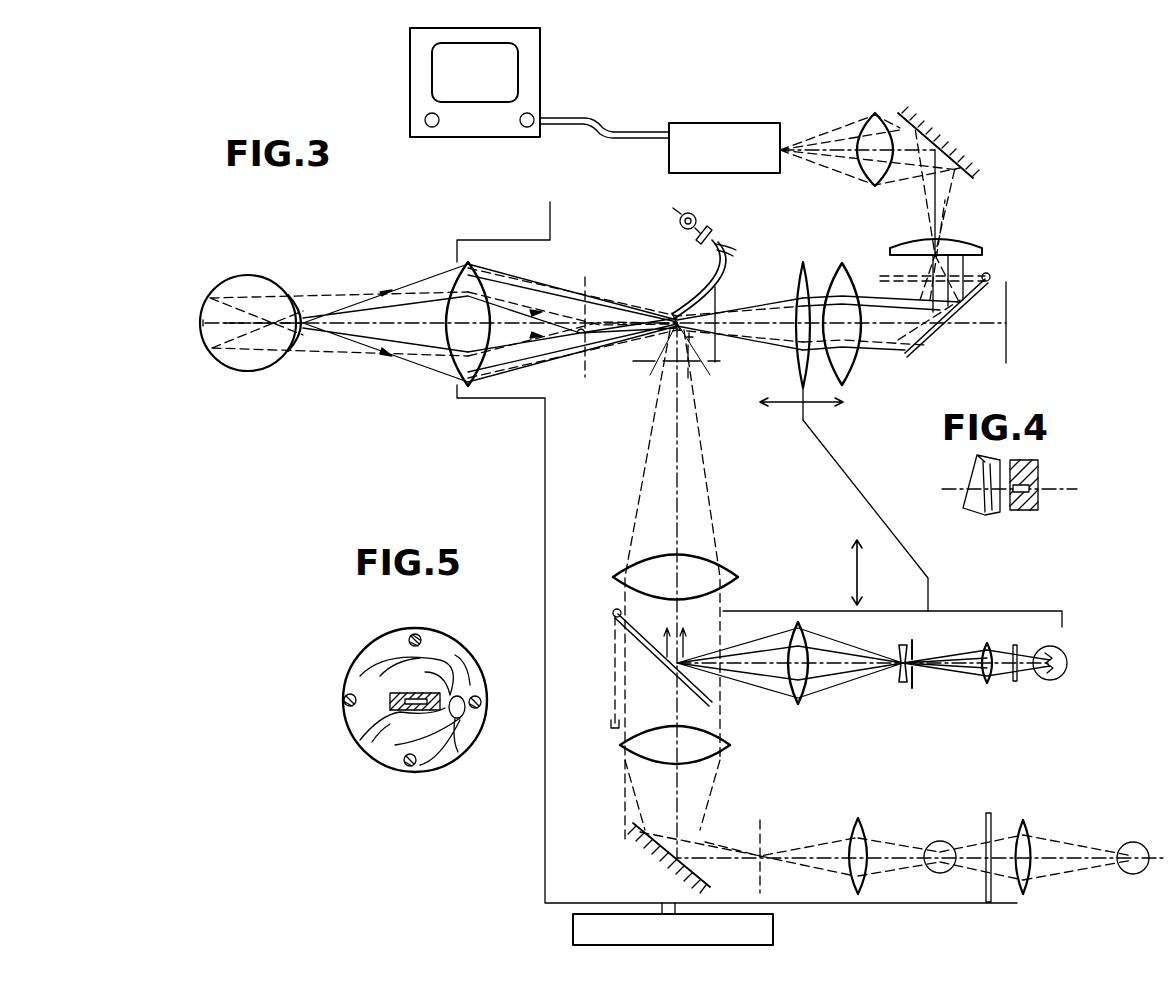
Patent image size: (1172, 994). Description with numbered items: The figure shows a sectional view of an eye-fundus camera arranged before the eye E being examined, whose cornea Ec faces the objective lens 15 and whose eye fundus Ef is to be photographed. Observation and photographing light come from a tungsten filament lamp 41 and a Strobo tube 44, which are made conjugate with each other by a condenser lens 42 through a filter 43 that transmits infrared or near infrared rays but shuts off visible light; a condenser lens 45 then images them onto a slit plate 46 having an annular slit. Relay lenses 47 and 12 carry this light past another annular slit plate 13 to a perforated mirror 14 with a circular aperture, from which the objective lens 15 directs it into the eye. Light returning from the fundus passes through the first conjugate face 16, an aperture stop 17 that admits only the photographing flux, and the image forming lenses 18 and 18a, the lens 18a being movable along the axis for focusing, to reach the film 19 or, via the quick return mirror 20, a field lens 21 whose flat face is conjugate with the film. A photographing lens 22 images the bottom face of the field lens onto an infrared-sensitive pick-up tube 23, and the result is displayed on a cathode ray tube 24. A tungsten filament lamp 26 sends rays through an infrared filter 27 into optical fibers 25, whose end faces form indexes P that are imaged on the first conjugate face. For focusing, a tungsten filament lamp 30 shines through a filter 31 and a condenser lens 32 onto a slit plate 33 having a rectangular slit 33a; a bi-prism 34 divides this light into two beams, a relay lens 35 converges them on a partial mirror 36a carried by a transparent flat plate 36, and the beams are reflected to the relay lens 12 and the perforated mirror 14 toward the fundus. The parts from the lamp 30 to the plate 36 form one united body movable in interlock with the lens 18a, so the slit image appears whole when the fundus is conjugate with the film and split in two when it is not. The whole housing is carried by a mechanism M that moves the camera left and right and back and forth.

In FIG. 3, the relay lens 12 is at (738, 577).
In FIG. 3, the slit plate 13 is at (632, 365).
In FIG. 3, the perforated mirror 14 is at (668, 303).
In FIG. 3, the objective lens 15 is at (462, 266).
In FIG. 3, the first conjugate face 16 is at (585, 280).
In FIG. 3, the aperture stop 17 is at (716, 300).
In FIG. 3, the image forming lens 18 is at (842, 263).
In FIG. 3, the image forming lens 18a is at (803, 265).
In FIG. 3, the film 19 is at (1006, 355).
In FIG. 3, the quick return mirror 20 is at (914, 350).
In FIG. 3, the field lens 21 is at (970, 250).
In FIG. 3, the photographing lens 22 is at (870, 116).
In FIG. 3, the pick-up tube 23 is at (724, 133).
In FIG. 3, the cathode ray tube 24 is at (530, 84).
In FIG. 3, the optical fiber 25 is at (691, 345).
In FIG. 3, the tungsten filament lamp 26 is at (695, 214).
In FIG. 3, the filter 27 is at (712, 232).
In FIG. 3, the tungsten filament lamp 30 is at (1058, 678).
In FIG. 3, the filter 31 is at (1016, 684).
In FIG. 3, the condenser lens 32 is at (988, 686).
In FIG. 3, the slit plate 33 is at (914, 690).
In FIG. 4, the slit plate 33 is at (1028, 512).
In FIG. 4, the slit 33a is at (1055, 473).
In FIG. 3, the bi-prism 34 is at (900, 688).
In FIG. 4, the bi-prism 34 is at (978, 506).
In FIG. 3, the relay lens 35 is at (806, 700).
In FIG. 3, the transparent flat plate 36 is at (712, 698).
In FIG. 3, the partial mirror 36a is at (675, 668).
In FIG. 3, the tungsten filament lamp 41 is at (1133, 842).
In FIG. 3, the condenser lens 42 is at (1026, 830).
In FIG. 3, the filter 43 is at (991, 818).
In FIG. 3, the Strobo tube 44 is at (940, 842).
In FIG. 3, the condenser lens 45 is at (858, 822).
In FIG. 3, the slit plate 46 is at (762, 826).
In FIG. 3, the relay lens 47 is at (730, 745).
In FIG. 3, the eye E is at (232, 280).
In FIG. 3, the cornea Ec is at (302, 303).
In FIG. 3, the eye fundus Ef is at (205, 323).
In FIG. 3, the index P is at (680, 330).
In FIG. 3, the mechanism M is at (673, 924).